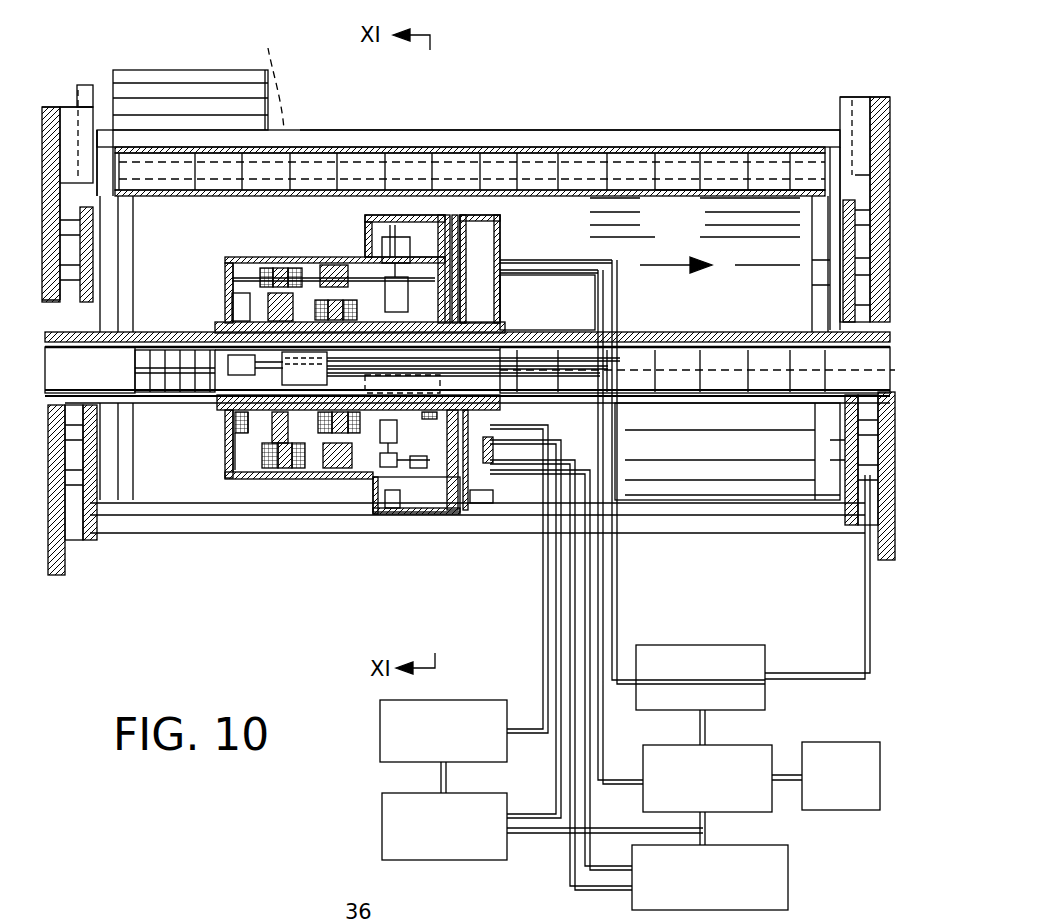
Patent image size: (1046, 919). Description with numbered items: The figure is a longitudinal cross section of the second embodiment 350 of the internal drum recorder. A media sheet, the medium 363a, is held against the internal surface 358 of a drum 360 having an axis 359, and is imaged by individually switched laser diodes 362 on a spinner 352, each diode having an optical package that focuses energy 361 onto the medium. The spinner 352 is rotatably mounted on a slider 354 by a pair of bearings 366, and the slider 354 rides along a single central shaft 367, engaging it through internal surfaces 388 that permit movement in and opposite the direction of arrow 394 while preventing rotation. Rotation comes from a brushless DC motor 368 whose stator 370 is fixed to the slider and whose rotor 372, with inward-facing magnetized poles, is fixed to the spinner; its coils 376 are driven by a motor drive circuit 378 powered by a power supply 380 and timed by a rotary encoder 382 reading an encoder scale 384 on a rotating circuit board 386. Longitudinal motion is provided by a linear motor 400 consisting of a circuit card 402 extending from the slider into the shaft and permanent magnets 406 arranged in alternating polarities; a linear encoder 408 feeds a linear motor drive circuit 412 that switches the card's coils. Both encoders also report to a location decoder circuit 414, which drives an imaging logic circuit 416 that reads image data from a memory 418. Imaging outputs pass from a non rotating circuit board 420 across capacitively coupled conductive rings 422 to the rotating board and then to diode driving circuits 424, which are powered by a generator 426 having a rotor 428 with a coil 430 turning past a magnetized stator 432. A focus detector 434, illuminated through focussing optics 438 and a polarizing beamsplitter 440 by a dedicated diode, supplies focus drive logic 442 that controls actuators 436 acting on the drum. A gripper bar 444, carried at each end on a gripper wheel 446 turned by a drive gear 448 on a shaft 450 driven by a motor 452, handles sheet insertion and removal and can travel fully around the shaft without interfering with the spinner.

The second embodiment 350 is at (302, 128).
The spinner 352 is at (360, 250).
The slider 354 is at (215, 418).
The internal surface 358 is at (742, 190).
The axis 359 is at (758, 347).
The drum 360 is at (665, 130).
The energy 361 is at (415, 200).
The laser diodes 362 is at (445, 257).
The medium 363a is at (833, 210).
The bearings 366 is at (250, 275).
The central shaft 367 is at (150, 335).
The brushless DC motor 368 is at (357, 215).
The stator 370 is at (390, 277).
The rotor 372 is at (360, 480).
The coils 376 is at (385, 515).
The motor drive circuit 378 is at (500, 430).
The power supply 380 is at (380, 765).
The rotary encoder 382 is at (465, 515).
The encoder scale 384 is at (445, 520).
The rotating circuit board 386 is at (462, 215).
The internal surfaces 388 is at (525, 332).
The arrow 394 is at (668, 262).
The linear motor 400 is at (655, 347).
The circuit card 402 is at (290, 482).
The permanent magnets 406 is at (632, 370).
The linear encoder 408 is at (305, 270).
The linear motor drive circuit 412 is at (235, 300).
The location decoder circuit 414 is at (788, 878).
The imaging logic circuit 416 is at (765, 812).
The memory 418 is at (828, 742).
The non rotating circuit board 420 is at (480, 215).
The conductive rings 422 is at (468, 255).
The diode driving circuits 424 is at (468, 232).
The generator 426 is at (232, 448).
The rotor 428 is at (245, 480).
The coil 430 is at (275, 270).
The stator 432 is at (320, 480).
The focus detector 434 is at (440, 520).
The actuators 436 is at (75, 105).
The focussing optics 438 is at (390, 520).
The polarizing beamsplitter 440 is at (430, 515).
The focus drive logic 442 is at (712, 645).
The gripper bar 444 is at (655, 533).
The gripper wheel 446 is at (92, 540).
The drive gear 448 is at (60, 165).
The shaft 450 is at (260, 76).
The motor 452 is at (198, 70).